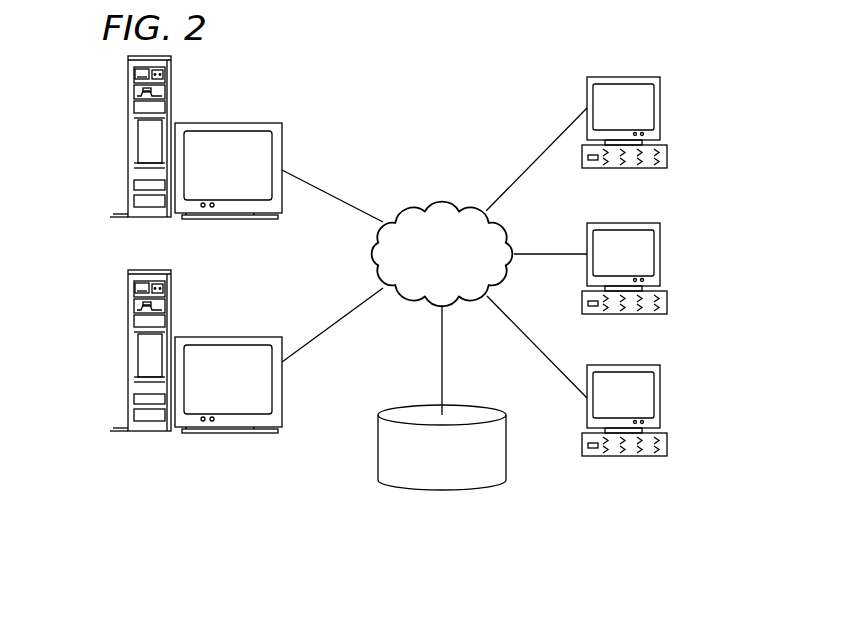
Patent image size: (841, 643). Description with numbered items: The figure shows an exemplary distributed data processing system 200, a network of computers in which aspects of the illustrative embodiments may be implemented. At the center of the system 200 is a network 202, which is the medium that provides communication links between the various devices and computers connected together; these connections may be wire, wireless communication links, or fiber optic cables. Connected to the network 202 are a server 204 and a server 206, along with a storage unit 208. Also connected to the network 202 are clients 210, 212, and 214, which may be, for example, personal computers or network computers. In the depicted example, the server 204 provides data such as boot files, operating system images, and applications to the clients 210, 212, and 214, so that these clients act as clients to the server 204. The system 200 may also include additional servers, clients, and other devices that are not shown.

The distributed data processing system 200 is at (496, 87).
The network 202 is at (413, 204).
The server 204 is at (128, 139).
The server 206 is at (128, 355).
The storage unit 208 is at (427, 490).
The client 210 is at (661, 110).
The client 212 is at (661, 255).
The client 214 is at (661, 398).